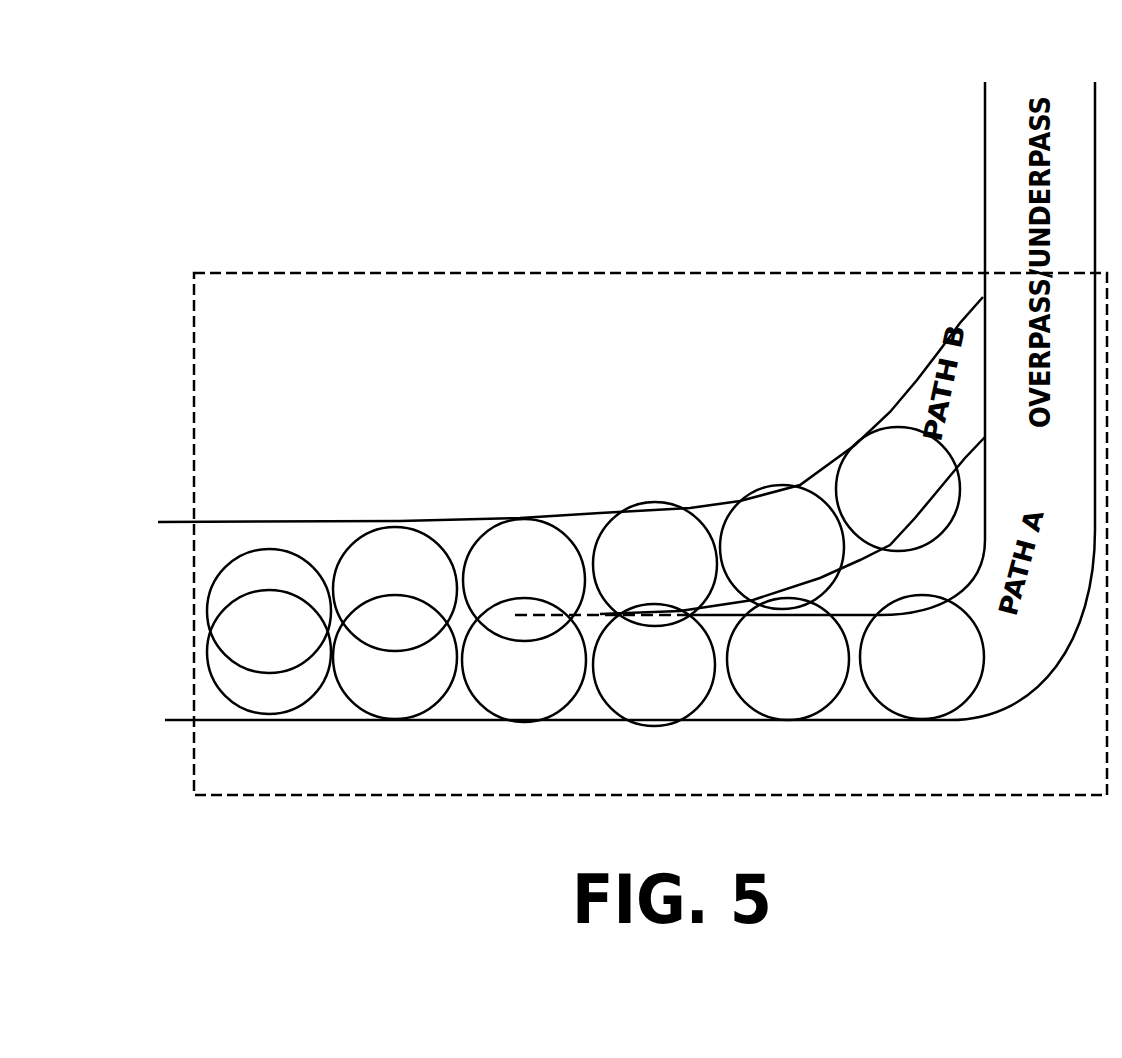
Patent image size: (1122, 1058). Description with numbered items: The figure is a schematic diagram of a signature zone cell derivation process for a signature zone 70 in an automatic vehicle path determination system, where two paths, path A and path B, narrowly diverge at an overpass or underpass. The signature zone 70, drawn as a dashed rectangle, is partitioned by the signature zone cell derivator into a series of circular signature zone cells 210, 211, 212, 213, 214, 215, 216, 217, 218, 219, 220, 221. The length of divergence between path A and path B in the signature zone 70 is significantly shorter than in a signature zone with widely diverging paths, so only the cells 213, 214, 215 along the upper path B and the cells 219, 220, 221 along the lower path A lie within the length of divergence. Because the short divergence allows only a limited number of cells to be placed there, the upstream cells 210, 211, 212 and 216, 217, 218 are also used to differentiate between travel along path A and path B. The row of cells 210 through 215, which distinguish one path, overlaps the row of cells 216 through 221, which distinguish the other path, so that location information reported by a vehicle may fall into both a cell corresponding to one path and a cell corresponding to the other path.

The signature zone 70 is at (650, 534).
The signature zone cell 210 is at (265, 545).
The signature zone cell 211 is at (388, 526).
The signature zone cell 212 is at (512, 518).
The signature zone cell 213 is at (630, 502).
The signature zone cell 214 is at (747, 493).
The signature zone cell 215 is at (858, 438).
The signature zone cell 216 is at (263, 713).
The signature zone cell 217 is at (393, 720).
The signature zone cell 218 is at (527, 719).
The signature zone cell 219 is at (677, 723).
The signature zone cell 220 is at (843, 697).
The signature zone cell 221 is at (980, 687).